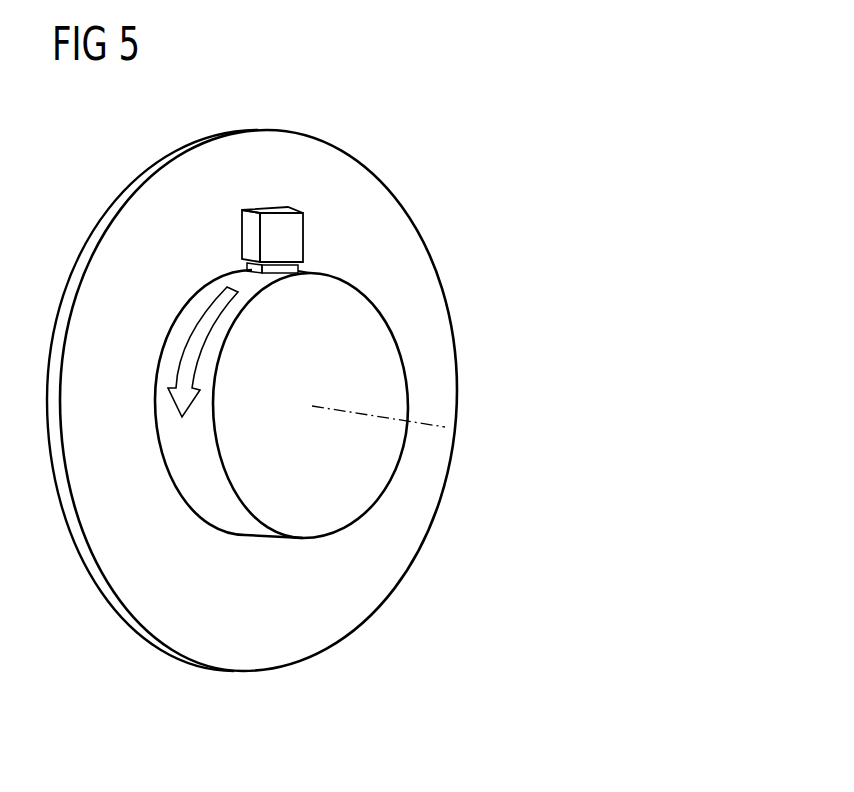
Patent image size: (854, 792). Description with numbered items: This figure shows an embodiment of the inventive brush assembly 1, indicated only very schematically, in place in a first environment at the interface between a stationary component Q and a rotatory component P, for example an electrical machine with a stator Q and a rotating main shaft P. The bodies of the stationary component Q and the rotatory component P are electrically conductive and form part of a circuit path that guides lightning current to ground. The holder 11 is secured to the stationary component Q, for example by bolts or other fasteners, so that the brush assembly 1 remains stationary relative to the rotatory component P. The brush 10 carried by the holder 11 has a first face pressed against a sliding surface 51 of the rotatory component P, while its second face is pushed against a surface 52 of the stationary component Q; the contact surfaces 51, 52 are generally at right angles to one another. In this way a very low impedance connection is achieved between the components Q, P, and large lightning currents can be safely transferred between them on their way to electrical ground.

The brush assembly 1 is at (284, 241).
The brush 10 is at (298, 268).
The holder 11 is at (250, 238).
The surface of the rotatory component 51 is at (248, 525).
The surface of the stationary component 52 is at (128, 228).
The rotatory component P is at (372, 313).
The stationary component Q is at (167, 178).